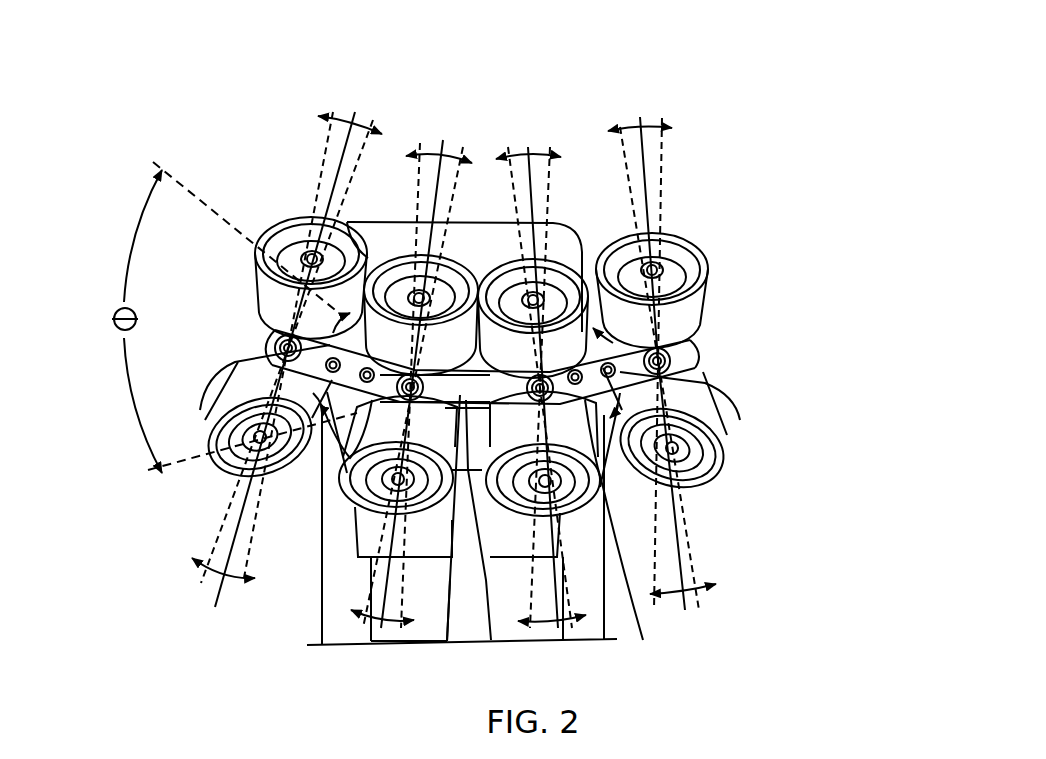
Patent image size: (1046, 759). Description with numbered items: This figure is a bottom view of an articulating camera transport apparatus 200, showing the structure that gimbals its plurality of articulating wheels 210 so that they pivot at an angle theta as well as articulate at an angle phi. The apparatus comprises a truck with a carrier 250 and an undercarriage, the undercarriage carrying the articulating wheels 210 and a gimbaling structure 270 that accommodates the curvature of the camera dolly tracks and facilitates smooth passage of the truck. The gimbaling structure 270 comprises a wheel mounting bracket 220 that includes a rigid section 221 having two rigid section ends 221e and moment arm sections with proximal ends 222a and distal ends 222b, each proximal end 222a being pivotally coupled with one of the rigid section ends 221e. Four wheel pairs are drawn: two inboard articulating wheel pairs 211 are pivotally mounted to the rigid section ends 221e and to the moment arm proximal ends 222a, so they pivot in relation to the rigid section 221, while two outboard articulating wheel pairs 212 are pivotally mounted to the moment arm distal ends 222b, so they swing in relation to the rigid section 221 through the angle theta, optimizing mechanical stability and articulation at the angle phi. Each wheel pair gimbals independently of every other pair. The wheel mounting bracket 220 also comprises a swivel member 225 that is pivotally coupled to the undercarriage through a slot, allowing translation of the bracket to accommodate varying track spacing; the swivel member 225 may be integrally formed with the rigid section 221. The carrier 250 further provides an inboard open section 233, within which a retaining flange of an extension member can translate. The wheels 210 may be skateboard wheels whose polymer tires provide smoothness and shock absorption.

The articulating camera transport apparatus 200 is at (724, 188).
The articulating wheels 210 is at (255, 275).
The inboard articulating wheel pairs 211 is at (402, 143).
The outboard articulating wheel pairs 212 is at (318, 78).
The wheel mounting bracket 220 is at (763, 292).
The rigid section 221 is at (464, 430).
The rigid section ends 221e is at (335, 462).
The moment arm section proximal ends 222a is at (318, 387).
The moment arm section distal ends 222b is at (274, 345).
The swivel member 225 is at (447, 641).
The inboard open section 233 is at (423, 632).
The carrier 250 is at (322, 607).
The gimbaling structure 270 is at (589, 363).